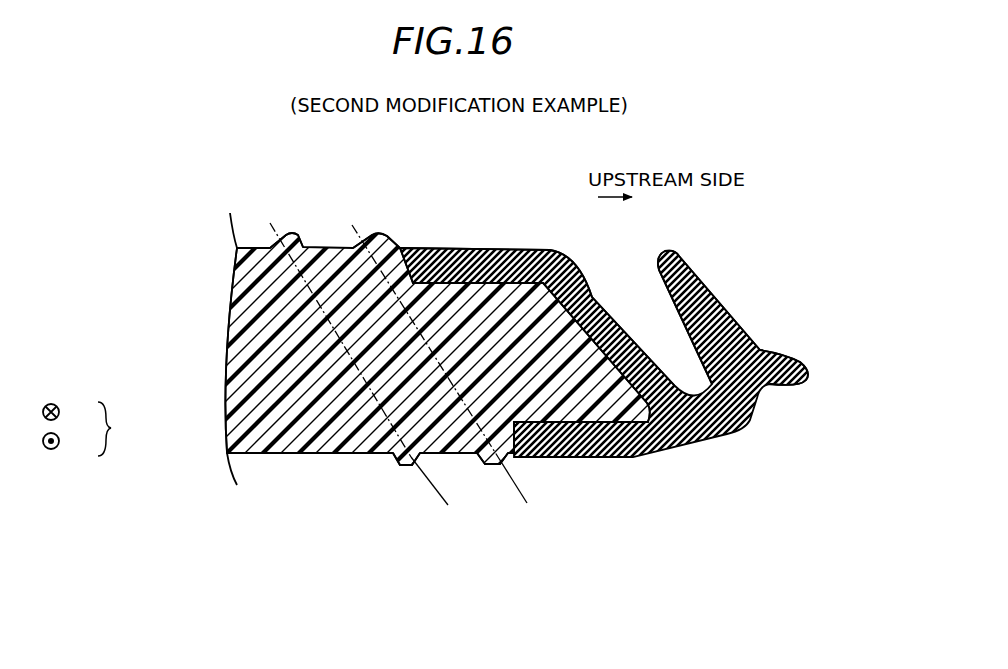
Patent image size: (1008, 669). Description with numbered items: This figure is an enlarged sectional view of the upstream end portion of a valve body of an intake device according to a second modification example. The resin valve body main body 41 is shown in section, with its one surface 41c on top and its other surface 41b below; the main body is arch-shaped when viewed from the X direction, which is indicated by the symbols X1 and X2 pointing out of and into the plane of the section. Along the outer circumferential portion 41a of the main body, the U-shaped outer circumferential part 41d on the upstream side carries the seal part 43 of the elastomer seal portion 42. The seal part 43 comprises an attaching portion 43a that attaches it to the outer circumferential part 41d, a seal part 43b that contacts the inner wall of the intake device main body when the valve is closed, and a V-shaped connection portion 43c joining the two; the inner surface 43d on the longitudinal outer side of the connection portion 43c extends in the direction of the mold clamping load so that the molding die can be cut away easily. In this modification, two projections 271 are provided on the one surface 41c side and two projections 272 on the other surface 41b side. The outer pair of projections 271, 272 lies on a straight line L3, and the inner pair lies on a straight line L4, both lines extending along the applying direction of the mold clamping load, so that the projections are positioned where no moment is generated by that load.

The valve body main body 41 is at (332, 462).
The outer circumferential portion 41a is at (487, 236).
The other surface 41b is at (292, 455).
The one surface 41c is at (242, 247).
The U-shaped outer circumferential part 41d is at (490, 340).
The projection 271 is at (295, 234).
The projection 272 is at (397, 458).
The seal part 43 is at (655, 466).
The seal portion 42 is at (623, 501).
The attaching portion 43a is at (548, 250).
The seal part 43b is at (796, 384).
The V-shaped connection portion 43c is at (600, 284).
The inner surface 43d is at (651, 266).
The straight line L3 is at (510, 480).
The straight line L4 is at (423, 480).
The X direction X is at (90, 428).
The X1 direction X1 is at (67, 442).
The X2 direction X2 is at (67, 413).